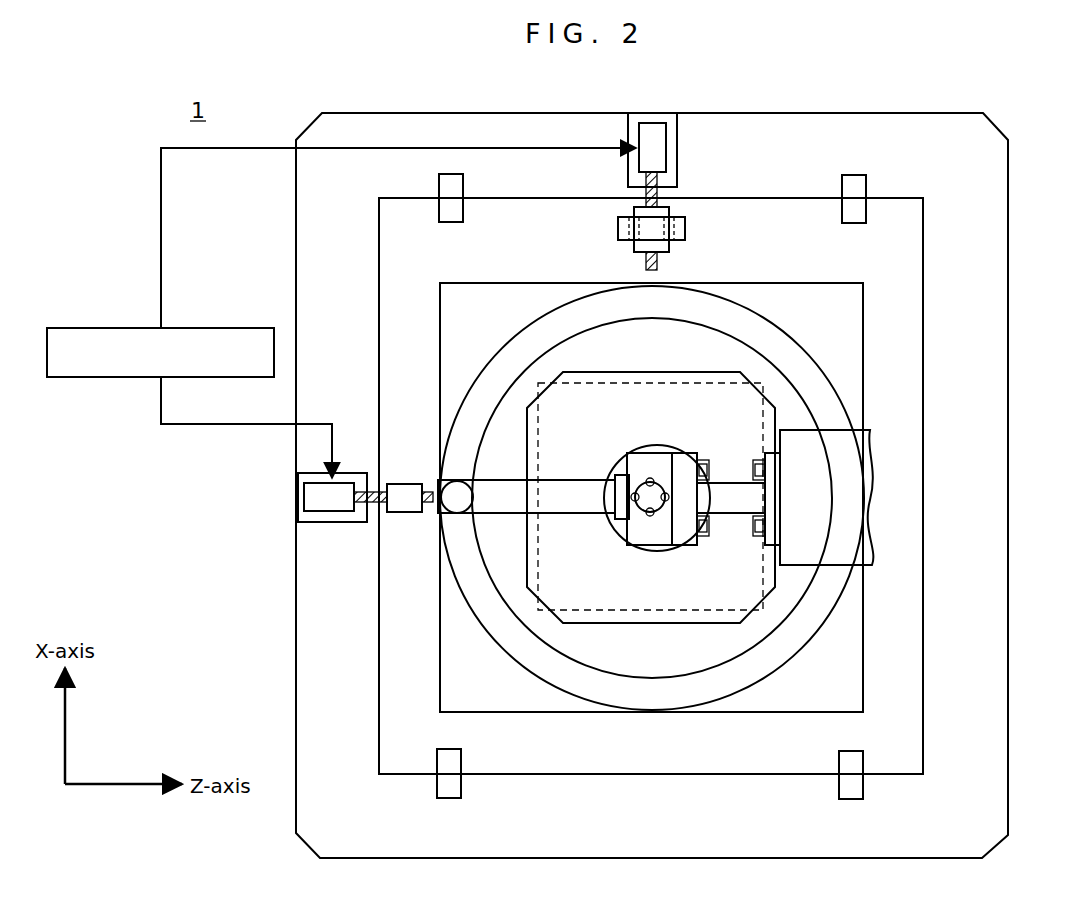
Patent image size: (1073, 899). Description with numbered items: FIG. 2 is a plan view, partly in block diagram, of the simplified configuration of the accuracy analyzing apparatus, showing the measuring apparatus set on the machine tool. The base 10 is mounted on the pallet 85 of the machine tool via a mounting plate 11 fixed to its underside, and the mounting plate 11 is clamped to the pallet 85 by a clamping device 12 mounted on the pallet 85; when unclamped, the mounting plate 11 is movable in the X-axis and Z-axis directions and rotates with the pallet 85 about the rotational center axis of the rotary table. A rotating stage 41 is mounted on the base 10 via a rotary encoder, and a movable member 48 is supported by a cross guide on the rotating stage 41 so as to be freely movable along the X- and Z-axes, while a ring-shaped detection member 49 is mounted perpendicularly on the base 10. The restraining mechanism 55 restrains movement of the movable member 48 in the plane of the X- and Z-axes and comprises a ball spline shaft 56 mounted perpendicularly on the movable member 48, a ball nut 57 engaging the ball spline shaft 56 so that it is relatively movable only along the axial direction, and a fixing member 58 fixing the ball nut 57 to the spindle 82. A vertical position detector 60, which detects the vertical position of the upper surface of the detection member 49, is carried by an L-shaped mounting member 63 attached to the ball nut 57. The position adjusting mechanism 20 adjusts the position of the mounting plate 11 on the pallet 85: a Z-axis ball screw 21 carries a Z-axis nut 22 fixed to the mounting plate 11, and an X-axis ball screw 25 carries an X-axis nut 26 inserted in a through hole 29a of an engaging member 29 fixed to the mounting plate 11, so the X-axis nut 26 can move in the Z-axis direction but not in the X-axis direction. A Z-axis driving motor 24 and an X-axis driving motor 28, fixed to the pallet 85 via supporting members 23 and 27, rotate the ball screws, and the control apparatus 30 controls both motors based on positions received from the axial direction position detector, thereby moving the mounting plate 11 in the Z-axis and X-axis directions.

The base 10 is at (863, 326).
The mounting plate 11 is at (923, 359).
The clamping device 12 is at (439, 188).
The position adjusting mechanism 20 is at (676, 191).
The Z-axis ball screw 21 is at (373, 490).
The Z-axis nut 22 is at (405, 510).
The supporting member 23 is at (304, 516).
The Z-axis driving motor 24 is at (305, 492).
The X-axis ball screw 25 is at (646, 262).
The X-axis nut 26 is at (672, 245).
The supporting member 27 is at (640, 162).
The X-axis driving motor 28 is at (664, 146).
The engaging member 29 is at (652, 229).
The through hole 29a is at (685, 225).
The control apparatus 30 is at (100, 328).
The rotating stage 41 is at (595, 605).
The movable member 48 is at (637, 623).
The detection member 49 is at (525, 665).
The restraining mechanism 55 is at (768, 467).
The ball spline shaft 56 is at (655, 488).
The ball nut 57 is at (637, 515).
The fixing member 58 is at (723, 488).
The vertical position detector 60 is at (456, 478).
The L-shaped mounting member 63 is at (500, 513).
The spindle 82 is at (880, 455).
The pallet 85 is at (1008, 242).